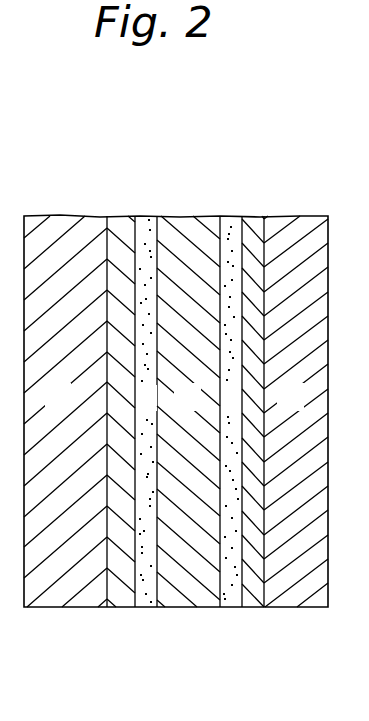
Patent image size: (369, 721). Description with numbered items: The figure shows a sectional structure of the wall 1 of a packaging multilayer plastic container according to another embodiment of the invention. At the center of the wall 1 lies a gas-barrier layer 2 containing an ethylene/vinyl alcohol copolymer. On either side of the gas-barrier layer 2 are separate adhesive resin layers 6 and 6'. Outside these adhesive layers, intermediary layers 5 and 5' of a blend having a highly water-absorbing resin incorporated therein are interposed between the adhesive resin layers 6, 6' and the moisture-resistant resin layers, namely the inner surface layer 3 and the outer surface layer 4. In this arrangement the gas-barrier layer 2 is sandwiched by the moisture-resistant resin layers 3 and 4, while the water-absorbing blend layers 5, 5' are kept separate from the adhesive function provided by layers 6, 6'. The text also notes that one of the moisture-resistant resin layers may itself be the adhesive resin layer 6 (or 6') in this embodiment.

The wall 1 is at (332, 617).
The gas-barrier layer 2 is at (188, 411).
The inner surface layer 3 is at (296, 411).
The outer surface layer 4 is at (65, 411).
The intermediary layer 5 is at (121, 377).
The intermediary layer 5' is at (251, 376).
The adhesive resin layer 6 is at (147, 411).
The adhesive resin layer 6' is at (231, 411).